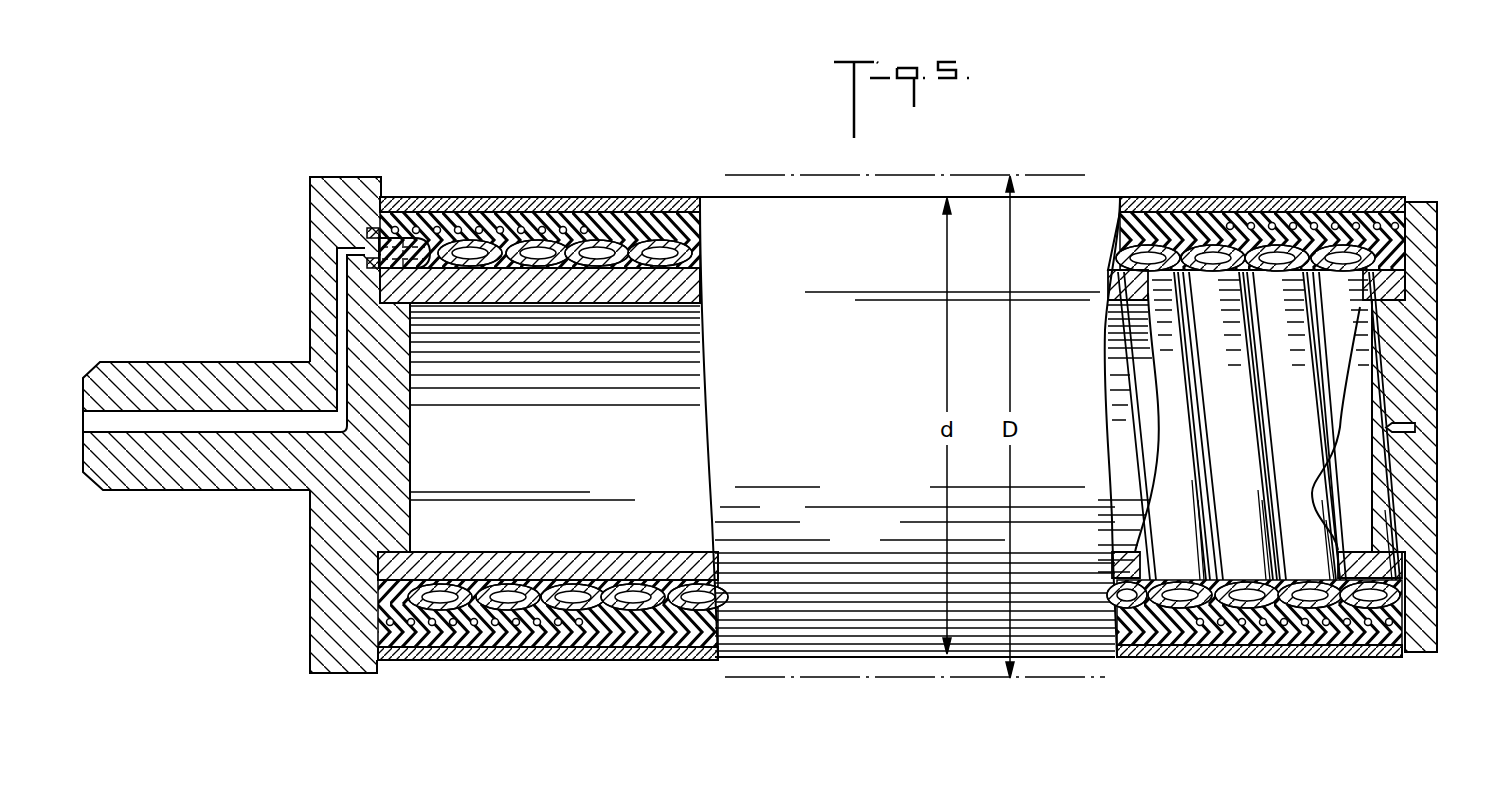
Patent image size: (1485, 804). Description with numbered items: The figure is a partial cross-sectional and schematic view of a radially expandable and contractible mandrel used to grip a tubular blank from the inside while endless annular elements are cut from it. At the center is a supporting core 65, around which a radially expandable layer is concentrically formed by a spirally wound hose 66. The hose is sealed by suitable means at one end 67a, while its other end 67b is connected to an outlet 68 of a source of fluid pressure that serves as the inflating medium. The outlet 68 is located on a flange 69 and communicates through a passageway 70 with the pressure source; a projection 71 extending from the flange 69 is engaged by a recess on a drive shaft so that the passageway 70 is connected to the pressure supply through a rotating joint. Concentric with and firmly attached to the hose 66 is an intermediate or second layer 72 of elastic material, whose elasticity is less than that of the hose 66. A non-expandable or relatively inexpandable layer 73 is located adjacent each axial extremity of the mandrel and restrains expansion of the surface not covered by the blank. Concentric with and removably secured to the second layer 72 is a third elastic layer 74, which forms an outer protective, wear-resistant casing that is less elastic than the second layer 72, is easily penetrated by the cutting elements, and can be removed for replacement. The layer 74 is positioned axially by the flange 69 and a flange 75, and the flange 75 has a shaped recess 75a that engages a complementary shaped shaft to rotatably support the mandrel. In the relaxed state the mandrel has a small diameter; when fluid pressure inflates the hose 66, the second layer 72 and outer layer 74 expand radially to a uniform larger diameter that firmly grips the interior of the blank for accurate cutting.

The supporting core 65 is at (525, 563).
The spirally wound hose 66 is at (682, 567).
The sealed end of hose 67a is at (1360, 630).
The other end of hose 67b is at (418, 233).
The outlet 68 is at (338, 254).
The flange 69 is at (310, 284).
The passageway 70 is at (187, 411).
The projection 71 is at (137, 362).
The intermediate or second layer 72 is at (618, 630).
The non-expandable layer 73 is at (520, 628).
The third elastic layer 74 is at (440, 662).
The flange 75 is at (1433, 327).
The shaped recess 75a is at (1420, 427).